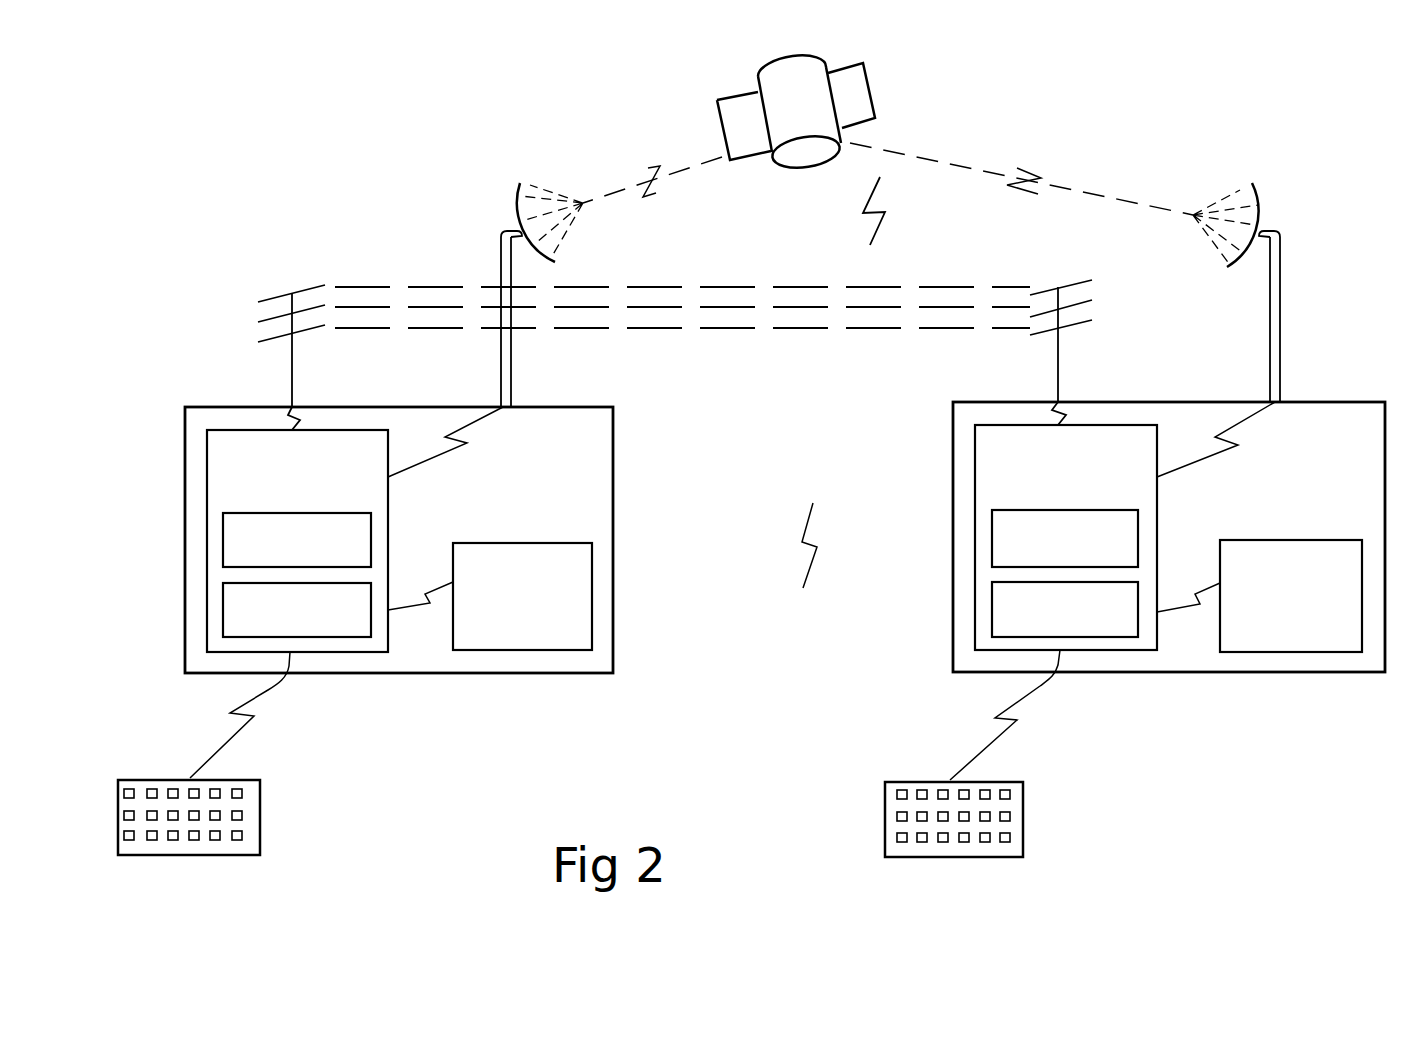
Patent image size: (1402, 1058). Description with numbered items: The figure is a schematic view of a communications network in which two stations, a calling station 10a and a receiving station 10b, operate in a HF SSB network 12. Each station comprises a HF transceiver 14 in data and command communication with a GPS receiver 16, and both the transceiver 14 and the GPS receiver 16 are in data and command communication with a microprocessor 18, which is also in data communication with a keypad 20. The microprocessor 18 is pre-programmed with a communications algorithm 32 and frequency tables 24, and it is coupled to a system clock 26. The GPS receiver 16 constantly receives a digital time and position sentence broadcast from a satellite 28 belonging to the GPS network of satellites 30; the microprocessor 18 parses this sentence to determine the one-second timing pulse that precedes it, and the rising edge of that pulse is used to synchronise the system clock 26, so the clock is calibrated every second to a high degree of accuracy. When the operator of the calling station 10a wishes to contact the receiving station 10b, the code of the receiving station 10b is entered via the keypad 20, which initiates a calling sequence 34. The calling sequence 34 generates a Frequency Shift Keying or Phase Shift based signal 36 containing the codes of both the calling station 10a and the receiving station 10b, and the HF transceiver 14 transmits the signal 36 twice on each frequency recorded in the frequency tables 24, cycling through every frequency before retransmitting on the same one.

The calling station 10a is at (360, 677).
The receiving station 10b is at (1138, 673).
The HF SSB network 12 is at (802, 560).
The HF transceiver 14 is at (292, 357).
The GPS receiver 16 is at (511, 357).
The microprocessor 18 is at (325, 476).
The keypad 20 is at (262, 805).
The frequency tables 24 is at (327, 610).
The system clock 26 is at (555, 612).
The satellite 28 is at (767, 113).
The GPS network of satellites 30 is at (870, 226).
The communications algorithm 32 is at (325, 541).
The calling sequence 34 is at (392, 297).
The signal 36 is at (754, 318).